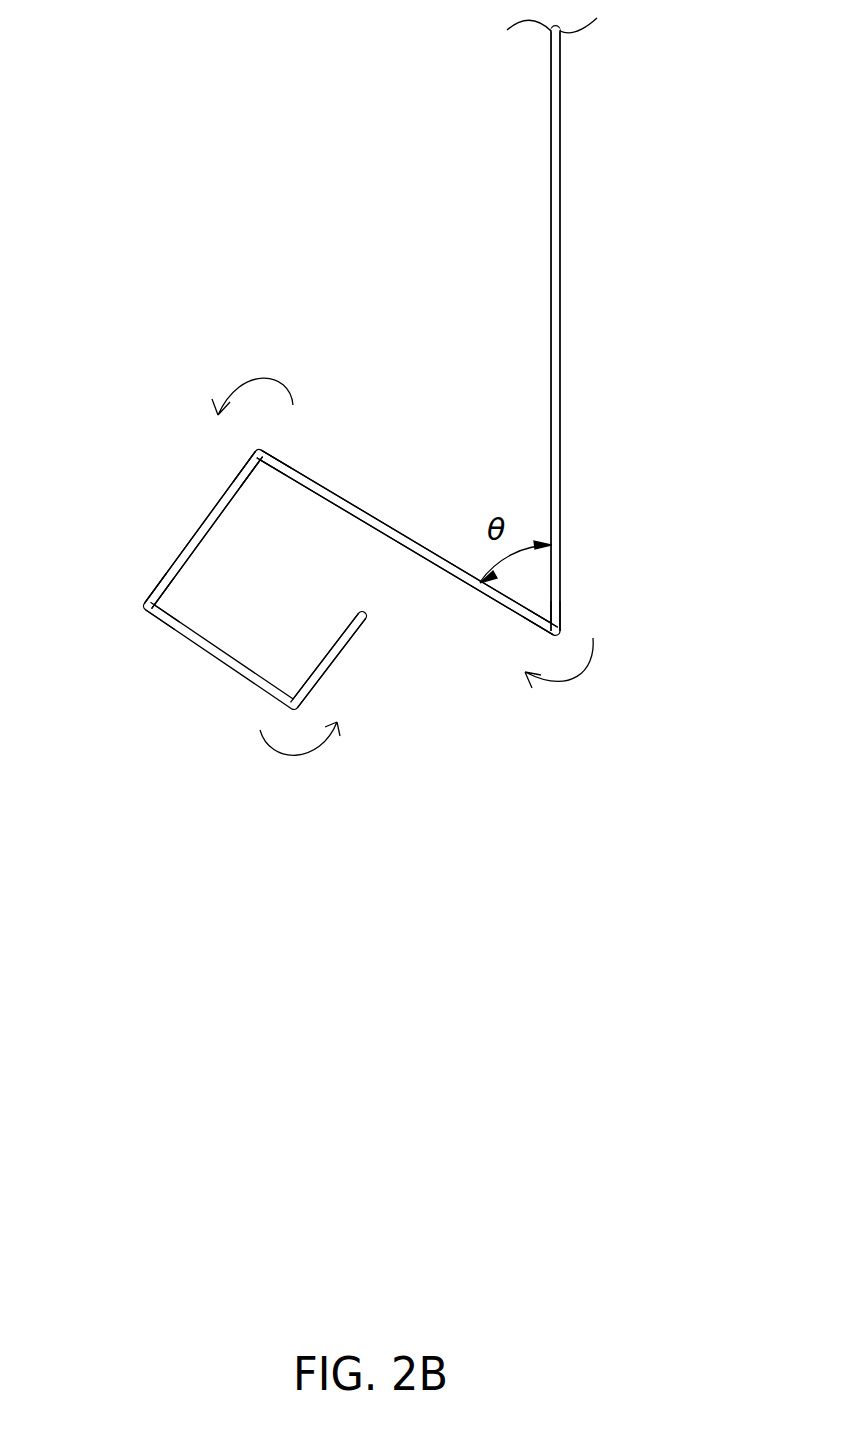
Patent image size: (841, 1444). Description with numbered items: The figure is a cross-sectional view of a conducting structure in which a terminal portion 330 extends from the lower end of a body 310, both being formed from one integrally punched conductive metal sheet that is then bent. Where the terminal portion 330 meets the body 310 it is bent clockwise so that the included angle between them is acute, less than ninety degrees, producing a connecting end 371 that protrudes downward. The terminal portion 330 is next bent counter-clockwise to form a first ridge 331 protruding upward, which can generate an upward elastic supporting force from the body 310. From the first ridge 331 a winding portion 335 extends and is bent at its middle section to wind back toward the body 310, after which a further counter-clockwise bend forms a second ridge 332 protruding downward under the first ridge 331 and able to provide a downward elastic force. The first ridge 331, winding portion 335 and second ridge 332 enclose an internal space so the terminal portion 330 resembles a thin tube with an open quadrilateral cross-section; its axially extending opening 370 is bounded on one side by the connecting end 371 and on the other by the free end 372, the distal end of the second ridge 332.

The body 310 is at (552, 232).
The terminal portion 330 is at (410, 547).
The first ridge 331 is at (253, 453).
The second ridge 332 is at (293, 707).
The winding portion 335 is at (187, 552).
The opening 370 is at (400, 592).
The connecting end 371 is at (560, 627).
The free end 372 is at (362, 617).